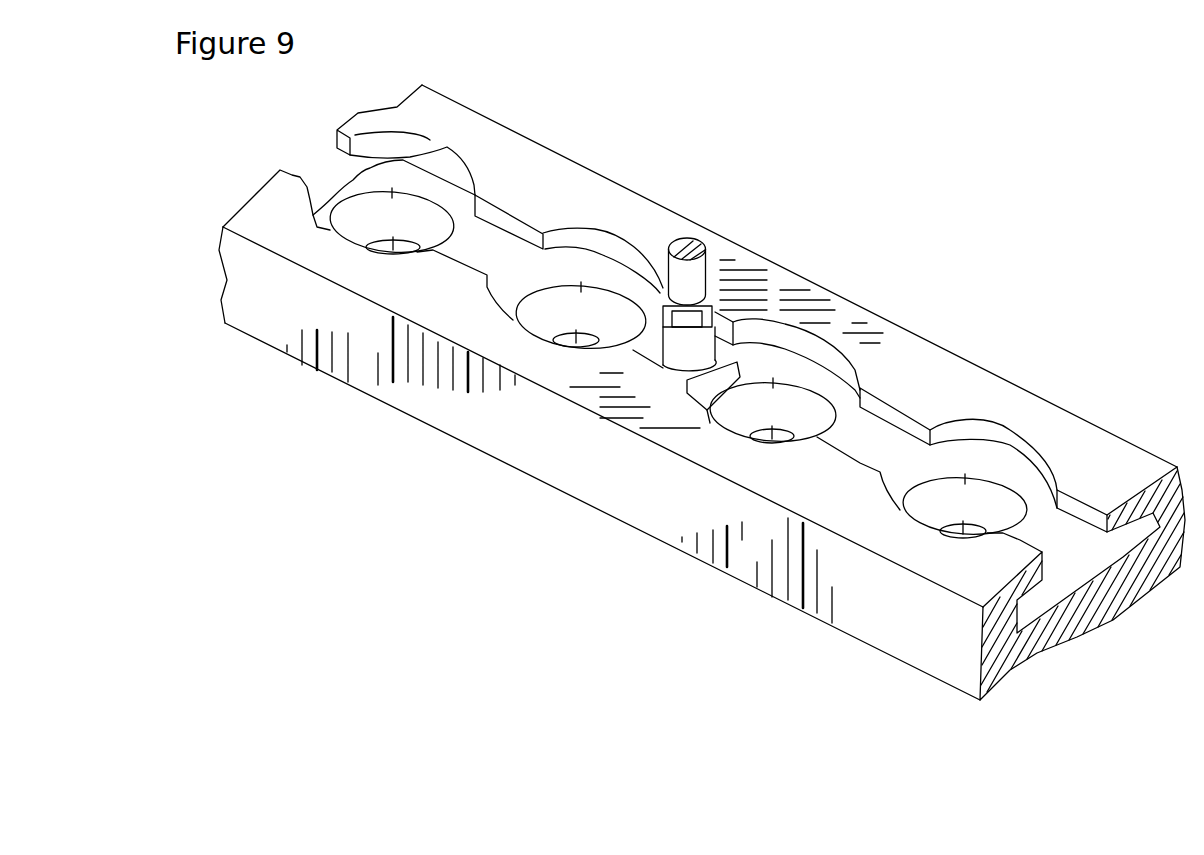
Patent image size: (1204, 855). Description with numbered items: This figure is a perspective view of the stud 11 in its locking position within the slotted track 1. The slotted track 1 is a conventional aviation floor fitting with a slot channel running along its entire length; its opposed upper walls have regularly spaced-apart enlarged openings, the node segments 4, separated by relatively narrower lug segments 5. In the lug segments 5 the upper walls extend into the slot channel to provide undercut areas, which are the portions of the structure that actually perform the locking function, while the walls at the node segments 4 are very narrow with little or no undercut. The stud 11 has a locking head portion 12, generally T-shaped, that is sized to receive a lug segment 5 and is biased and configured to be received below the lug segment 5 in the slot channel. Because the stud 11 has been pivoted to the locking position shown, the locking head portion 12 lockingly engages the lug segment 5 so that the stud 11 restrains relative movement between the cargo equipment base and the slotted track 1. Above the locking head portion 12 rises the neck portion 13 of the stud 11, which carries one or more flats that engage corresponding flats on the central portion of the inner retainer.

The slotted track 1 is at (917, 368).
The node segment 4 is at (977, 497).
The lug segment 5 is at (870, 452).
The stud 11 is at (690, 347).
The locking head portion 12 is at (705, 384).
The neck portion 13 is at (690, 272).